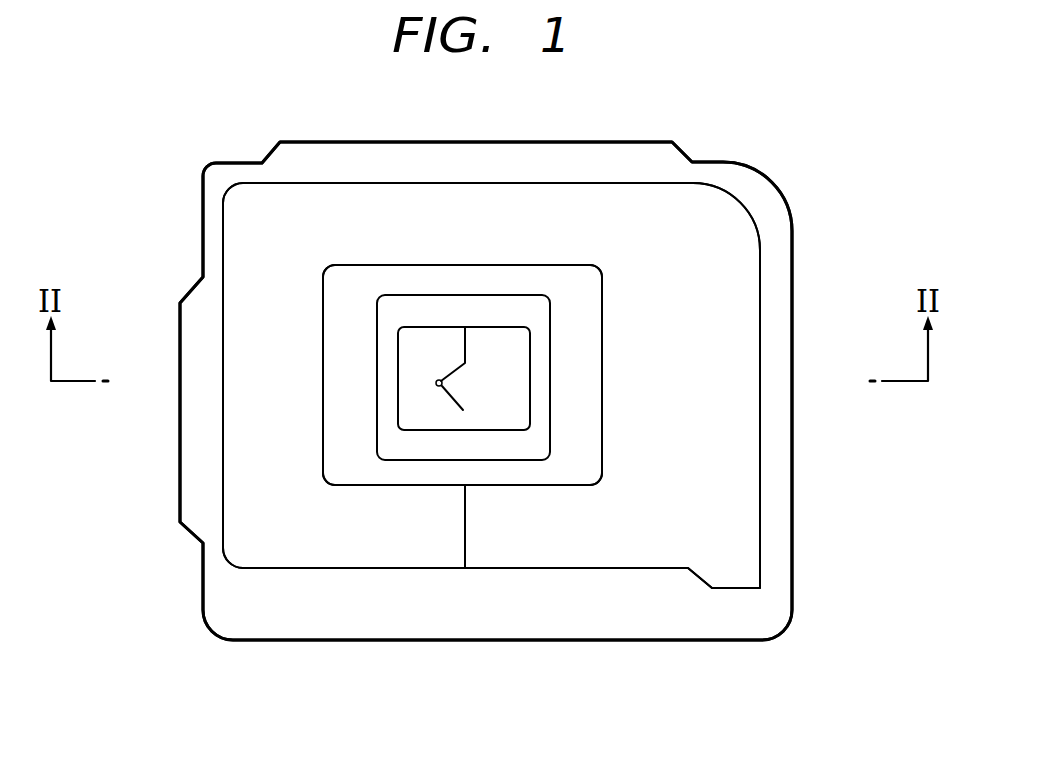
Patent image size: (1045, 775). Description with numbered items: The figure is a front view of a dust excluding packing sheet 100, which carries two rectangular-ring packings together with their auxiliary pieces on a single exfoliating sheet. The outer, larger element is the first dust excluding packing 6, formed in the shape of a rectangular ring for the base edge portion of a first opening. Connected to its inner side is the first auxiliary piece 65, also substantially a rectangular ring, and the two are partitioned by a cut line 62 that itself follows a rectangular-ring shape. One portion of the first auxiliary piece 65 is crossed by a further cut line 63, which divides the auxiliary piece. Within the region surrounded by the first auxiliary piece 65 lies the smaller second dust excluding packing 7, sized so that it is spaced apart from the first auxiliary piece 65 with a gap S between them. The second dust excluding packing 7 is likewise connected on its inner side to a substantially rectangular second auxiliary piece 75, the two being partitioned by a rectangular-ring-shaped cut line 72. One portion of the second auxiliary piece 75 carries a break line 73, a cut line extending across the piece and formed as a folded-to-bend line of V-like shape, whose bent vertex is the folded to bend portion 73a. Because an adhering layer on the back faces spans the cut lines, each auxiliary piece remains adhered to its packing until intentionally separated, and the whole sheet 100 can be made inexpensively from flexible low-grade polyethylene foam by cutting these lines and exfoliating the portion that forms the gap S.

The dust excluding packing sheet 100 is at (762, 147).
The first dust excluding packing 6 is at (780, 465).
The cut line 62 is at (760, 498).
The first auxiliary piece 65 is at (728, 535).
The cut line 63 is at (465, 538).
The second dust excluding packing 7 is at (547, 336).
The gap S is at (580, 468).
The cut line 72 is at (532, 378).
The second auxiliary piece 75 is at (510, 402).
The break line 73 is at (463, 343).
The folded to bend portion 73a is at (436, 383).